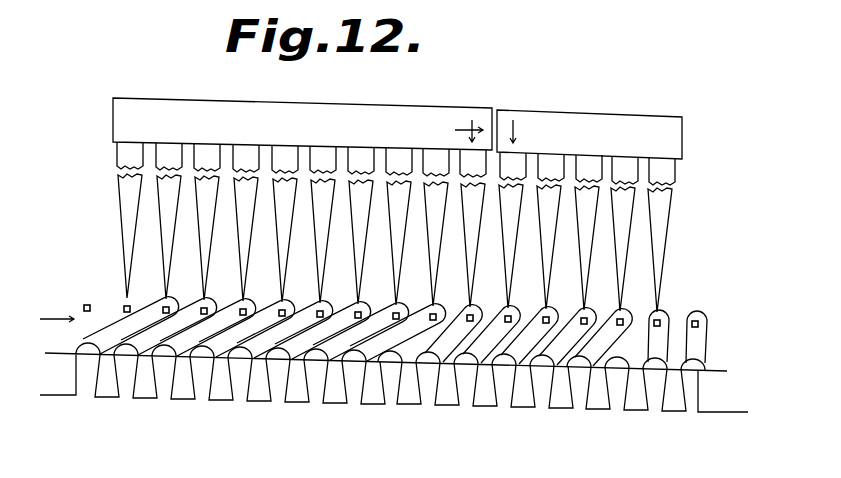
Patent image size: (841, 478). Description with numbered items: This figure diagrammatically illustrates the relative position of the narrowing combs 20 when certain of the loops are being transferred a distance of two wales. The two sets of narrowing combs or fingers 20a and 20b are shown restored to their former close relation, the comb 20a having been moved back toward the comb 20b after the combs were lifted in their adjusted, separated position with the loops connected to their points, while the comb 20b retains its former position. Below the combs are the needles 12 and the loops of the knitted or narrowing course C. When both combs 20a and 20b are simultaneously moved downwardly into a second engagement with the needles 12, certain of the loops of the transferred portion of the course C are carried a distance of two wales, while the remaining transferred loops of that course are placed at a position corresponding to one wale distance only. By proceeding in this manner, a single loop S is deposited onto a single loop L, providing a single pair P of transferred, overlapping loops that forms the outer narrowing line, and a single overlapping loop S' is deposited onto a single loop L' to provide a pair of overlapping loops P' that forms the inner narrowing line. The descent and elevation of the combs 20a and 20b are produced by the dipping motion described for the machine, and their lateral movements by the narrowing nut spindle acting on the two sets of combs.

The narrowing combs 20 is at (402, 119).
The narrowing comb 20a is at (454, 81).
The narrowing comb 20b is at (688, 92).
The needles 12 is at (124, 307).
The knitted course C is at (47, 319).
The loop L is at (446, 320).
The loop L' is at (680, 320).
The loop S is at (453, 323).
The overlapping loop S' is at (613, 323).
The pair of transferred overlapping loops P is at (459, 320).
The pair of overlapping loops P' is at (680, 314).